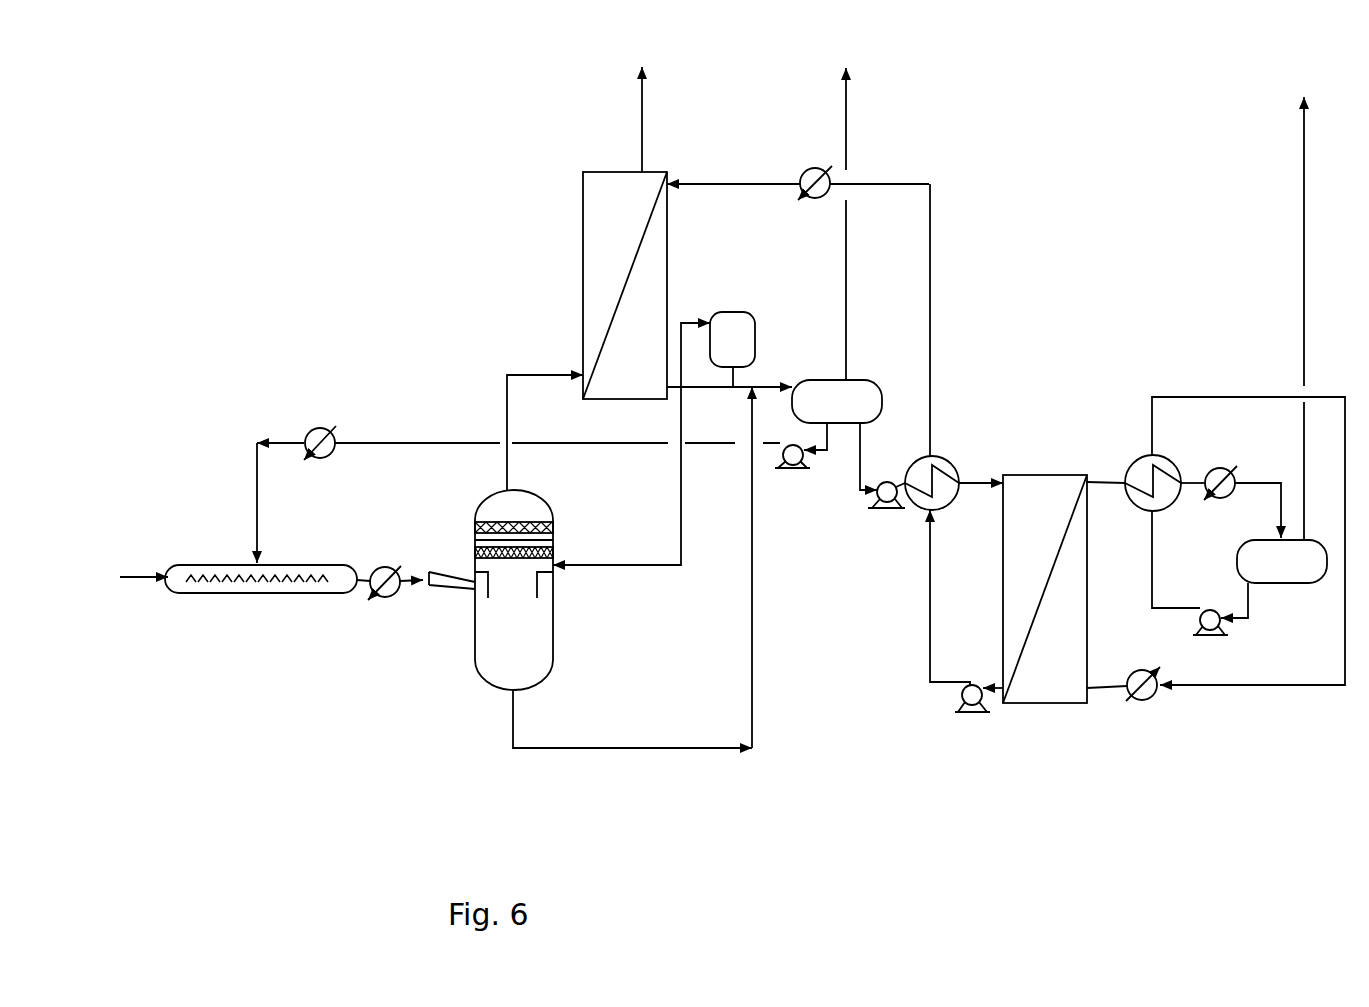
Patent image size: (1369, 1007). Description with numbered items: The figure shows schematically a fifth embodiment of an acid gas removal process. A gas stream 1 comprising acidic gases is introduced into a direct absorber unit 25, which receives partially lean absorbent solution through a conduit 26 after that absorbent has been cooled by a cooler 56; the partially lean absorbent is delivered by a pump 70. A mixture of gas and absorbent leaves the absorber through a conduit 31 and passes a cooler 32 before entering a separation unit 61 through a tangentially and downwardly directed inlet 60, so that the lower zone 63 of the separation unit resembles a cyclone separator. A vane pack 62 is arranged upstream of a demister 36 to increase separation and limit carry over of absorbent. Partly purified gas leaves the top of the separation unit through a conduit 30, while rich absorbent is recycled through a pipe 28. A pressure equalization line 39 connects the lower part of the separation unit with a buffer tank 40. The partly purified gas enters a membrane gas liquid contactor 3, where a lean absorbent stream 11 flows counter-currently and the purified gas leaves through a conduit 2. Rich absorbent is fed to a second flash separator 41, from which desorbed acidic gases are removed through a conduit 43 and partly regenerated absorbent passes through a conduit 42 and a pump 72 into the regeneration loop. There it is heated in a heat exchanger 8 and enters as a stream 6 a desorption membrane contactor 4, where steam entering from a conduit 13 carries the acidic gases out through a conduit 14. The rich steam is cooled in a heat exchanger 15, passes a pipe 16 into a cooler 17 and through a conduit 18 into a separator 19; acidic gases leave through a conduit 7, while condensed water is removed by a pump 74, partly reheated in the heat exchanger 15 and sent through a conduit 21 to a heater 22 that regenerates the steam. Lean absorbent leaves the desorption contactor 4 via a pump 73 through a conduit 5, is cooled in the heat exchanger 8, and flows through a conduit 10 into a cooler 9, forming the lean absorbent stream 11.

The gas stream 1 is at (144, 558).
The conduit 2 is at (627, 119).
The membrane gas liquid contactor 3 is at (625, 300).
The desorption membrane contactor 4 is at (1045, 611).
The conduit 5 is at (939, 598).
The stream 6 is at (981, 462).
The conduit 7 is at (1309, 298).
The heat exchanger 8 is at (931, 471).
The cooler 9 is at (815, 170).
The conduit 10 is at (949, 320).
The stream of liquid absorbent 11 is at (798, 165).
The conduit 13 is at (1107, 672).
The conduit 14 is at (1106, 464).
The heat exchanger 15 is at (1163, 492).
The pipe 16 is at (1192, 467).
The cooler 17 is at (1227, 497).
The conduit 18 is at (1265, 494).
The separator 19 is at (1282, 561).
The conduit 21 is at (1248, 522).
The heater 22 is at (1149, 697).
The direct absorber unit 25 is at (261, 597).
The conduit 26 is at (518, 486).
The pipe 28 is at (632, 584).
The conduit 30 is at (545, 415).
The conduit 31 is at (357, 582).
The cooler 32 is at (386, 568).
The demister 36 is at (475, 528).
The pressure equalization line 39 is at (621, 493).
The buffer tank 40 is at (718, 333).
The second flash separator 41 is at (774, 401).
The conduit 42 is at (848, 468).
The conduit 43 is at (868, 217).
The cooler 56 is at (320, 463).
The inlet 60 is at (437, 598).
The separation unit 61 is at (528, 593).
The vane pack 62 is at (535, 554).
The lower zone 63 is at (514, 588).
The pump 70 is at (798, 463).
The pump 72 is at (886, 513).
The pump 73 is at (978, 714).
The pump 74 is at (1220, 625).